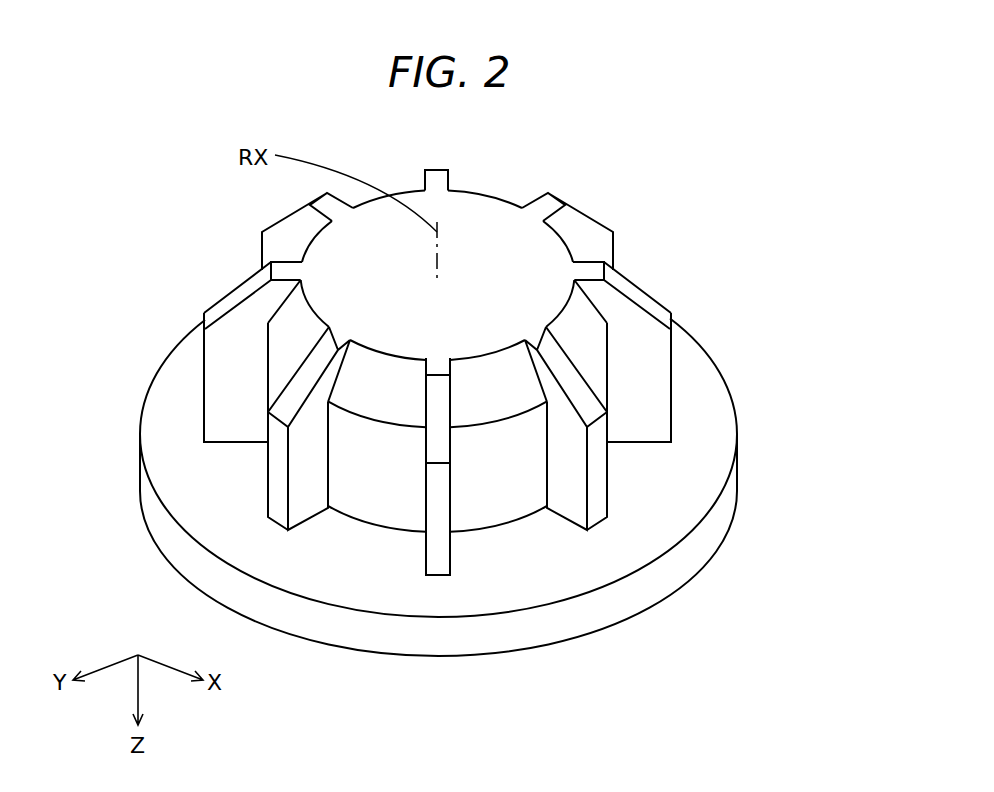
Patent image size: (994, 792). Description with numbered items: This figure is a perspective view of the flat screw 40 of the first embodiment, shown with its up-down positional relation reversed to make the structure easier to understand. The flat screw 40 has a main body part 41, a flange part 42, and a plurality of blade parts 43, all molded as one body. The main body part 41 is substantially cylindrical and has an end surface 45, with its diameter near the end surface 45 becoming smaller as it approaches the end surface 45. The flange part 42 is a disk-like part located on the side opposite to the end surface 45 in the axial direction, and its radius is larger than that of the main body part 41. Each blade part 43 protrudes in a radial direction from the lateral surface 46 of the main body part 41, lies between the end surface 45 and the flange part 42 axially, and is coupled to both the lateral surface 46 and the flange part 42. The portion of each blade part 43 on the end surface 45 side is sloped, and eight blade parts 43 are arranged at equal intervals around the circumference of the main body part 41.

The flat screw 40 is at (731, 168).
The main body part 41 is at (477, 195).
The flange part 42 is at (737, 475).
The blade part 43 is at (266, 487).
The end surface 45 is at (490, 230).
The lateral surface 46 is at (505, 480).